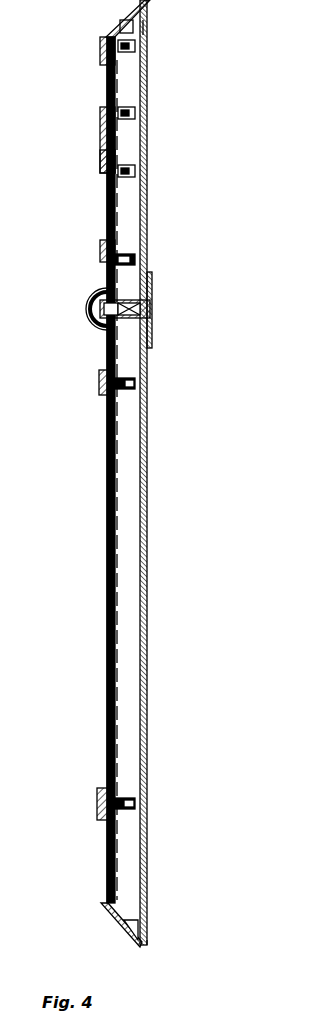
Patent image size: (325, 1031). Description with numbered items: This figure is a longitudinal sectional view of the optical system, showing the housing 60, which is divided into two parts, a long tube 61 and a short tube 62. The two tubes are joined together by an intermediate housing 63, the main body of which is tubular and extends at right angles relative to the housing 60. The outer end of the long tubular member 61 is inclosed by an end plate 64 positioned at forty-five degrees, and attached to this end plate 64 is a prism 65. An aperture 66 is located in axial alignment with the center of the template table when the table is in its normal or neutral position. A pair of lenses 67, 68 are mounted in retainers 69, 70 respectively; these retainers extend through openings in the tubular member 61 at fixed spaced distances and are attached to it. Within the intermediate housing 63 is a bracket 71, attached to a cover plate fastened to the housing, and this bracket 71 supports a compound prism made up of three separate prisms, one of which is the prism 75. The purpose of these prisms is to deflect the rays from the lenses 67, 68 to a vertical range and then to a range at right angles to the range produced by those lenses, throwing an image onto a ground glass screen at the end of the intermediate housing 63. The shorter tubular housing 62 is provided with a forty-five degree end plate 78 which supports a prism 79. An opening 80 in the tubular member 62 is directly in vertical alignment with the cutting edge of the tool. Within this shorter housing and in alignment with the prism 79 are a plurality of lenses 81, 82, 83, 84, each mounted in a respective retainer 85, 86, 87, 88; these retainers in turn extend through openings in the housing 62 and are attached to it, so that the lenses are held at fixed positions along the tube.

The housing 60 is at (86, 454).
The long tube 61 is at (107, 605).
The short tube 62 is at (107, 203).
The intermediate housing 63 is at (102, 320).
The end plate 64 is at (106, 910).
The prism 65 is at (135, 918).
The aperture 66 is at (142, 927).
The lens 67 is at (130, 810).
The lens 68 is at (130, 390).
The retainer 69 is at (105, 783).
The retainer 70 is at (105, 405).
The bracket 71 is at (150, 305).
The prism 75 is at (100, 308).
The end plate 78 is at (125, 12).
The prism 79 is at (130, 24).
The opening 80 is at (146, 30).
The lens 81 is at (125, 52).
The lens 82 is at (125, 118).
The lens 83 is at (125, 170).
The lens 84 is at (128, 256).
The retainer 85 is at (108, 66).
The retainer 86 is at (108, 100).
The retainer 87 is at (108, 180).
The retainer 88 is at (108, 246).